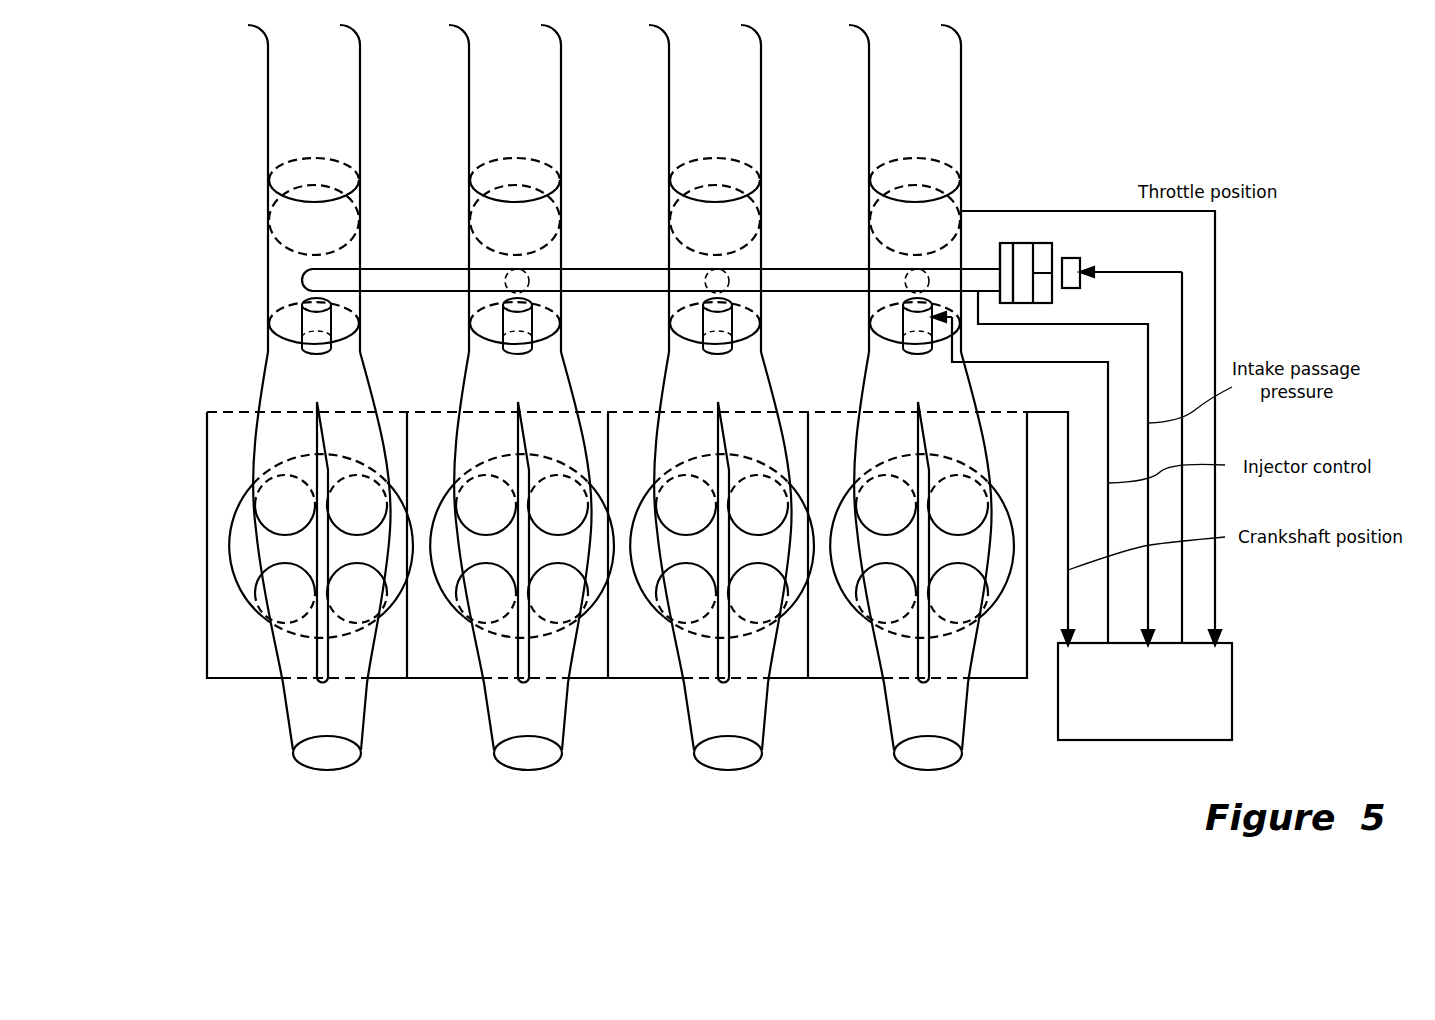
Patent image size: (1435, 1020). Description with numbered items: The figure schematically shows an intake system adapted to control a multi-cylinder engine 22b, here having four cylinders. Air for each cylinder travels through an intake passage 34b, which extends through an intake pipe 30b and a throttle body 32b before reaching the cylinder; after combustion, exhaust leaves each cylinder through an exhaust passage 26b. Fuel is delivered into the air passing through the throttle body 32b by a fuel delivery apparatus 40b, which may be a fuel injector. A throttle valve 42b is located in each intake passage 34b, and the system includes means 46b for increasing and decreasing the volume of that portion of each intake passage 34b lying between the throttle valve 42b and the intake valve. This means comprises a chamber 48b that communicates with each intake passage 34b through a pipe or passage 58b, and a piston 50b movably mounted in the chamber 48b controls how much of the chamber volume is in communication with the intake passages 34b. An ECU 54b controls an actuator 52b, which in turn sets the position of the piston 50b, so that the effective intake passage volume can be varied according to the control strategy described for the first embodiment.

The engine 22b is at (606, 684).
The exhaust passage 26b is at (286, 718).
The intake pipe 30b is at (268, 104).
The throttle body 32b is at (268, 293).
The intake passage 34b is at (292, 399).
The fuel delivery apparatus 40b is at (470, 321).
The throttle valve 42b is at (477, 240).
The means for changing the volume of the intake passage 46b is at (1062, 297).
The chamber 48b is at (1004, 257).
The piston 50b is at (1025, 257).
The actuator 52b is at (1071, 266).
The ECU 54b is at (1058, 722).
The pipe or passage 58b is at (788, 268).